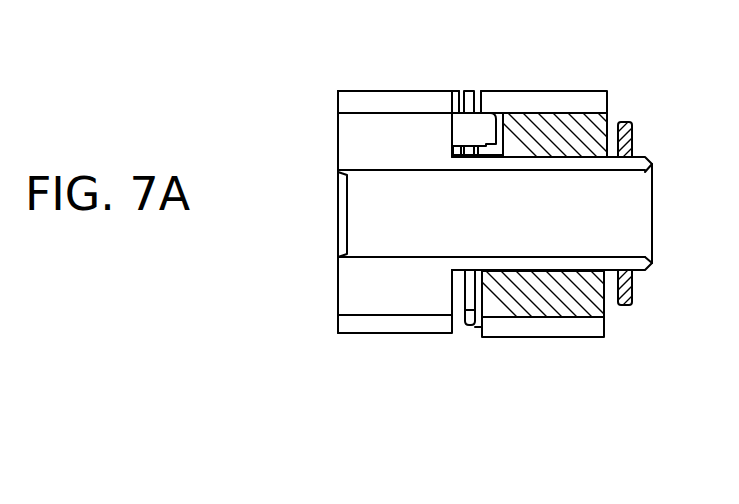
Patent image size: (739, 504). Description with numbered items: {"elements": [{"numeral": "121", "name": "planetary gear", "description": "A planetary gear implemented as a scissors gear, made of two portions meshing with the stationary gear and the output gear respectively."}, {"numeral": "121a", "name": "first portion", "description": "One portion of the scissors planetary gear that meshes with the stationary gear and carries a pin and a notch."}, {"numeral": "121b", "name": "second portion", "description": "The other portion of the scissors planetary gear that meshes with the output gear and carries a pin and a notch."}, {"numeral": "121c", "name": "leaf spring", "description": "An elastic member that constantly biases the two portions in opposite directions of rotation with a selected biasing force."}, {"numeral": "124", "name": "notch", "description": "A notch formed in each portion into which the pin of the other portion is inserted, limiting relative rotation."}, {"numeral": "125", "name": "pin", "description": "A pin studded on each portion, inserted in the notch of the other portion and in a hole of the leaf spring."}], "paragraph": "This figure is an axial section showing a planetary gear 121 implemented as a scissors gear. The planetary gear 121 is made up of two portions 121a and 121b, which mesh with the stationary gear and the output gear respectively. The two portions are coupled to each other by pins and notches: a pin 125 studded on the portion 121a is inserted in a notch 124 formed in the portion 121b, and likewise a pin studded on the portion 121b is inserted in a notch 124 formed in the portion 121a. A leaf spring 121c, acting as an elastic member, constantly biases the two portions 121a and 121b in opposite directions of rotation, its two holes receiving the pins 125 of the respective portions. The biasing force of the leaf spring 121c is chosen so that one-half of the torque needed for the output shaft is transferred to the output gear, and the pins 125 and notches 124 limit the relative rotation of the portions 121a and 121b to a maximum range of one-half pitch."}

The bushing 121 is at (395, 74).
The bushing upper portion 121a is at (418, 128).
The bushing lower portion 121b is at (560, 308).
The slit 121c is at (461, 312).
The ring member 124 is at (504, 128).
The flange 125 is at (487, 115).